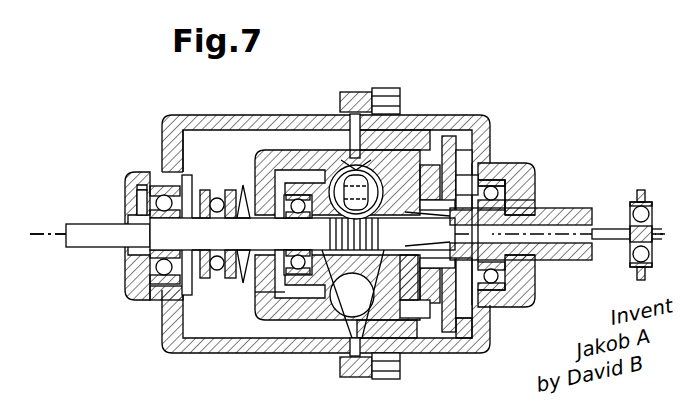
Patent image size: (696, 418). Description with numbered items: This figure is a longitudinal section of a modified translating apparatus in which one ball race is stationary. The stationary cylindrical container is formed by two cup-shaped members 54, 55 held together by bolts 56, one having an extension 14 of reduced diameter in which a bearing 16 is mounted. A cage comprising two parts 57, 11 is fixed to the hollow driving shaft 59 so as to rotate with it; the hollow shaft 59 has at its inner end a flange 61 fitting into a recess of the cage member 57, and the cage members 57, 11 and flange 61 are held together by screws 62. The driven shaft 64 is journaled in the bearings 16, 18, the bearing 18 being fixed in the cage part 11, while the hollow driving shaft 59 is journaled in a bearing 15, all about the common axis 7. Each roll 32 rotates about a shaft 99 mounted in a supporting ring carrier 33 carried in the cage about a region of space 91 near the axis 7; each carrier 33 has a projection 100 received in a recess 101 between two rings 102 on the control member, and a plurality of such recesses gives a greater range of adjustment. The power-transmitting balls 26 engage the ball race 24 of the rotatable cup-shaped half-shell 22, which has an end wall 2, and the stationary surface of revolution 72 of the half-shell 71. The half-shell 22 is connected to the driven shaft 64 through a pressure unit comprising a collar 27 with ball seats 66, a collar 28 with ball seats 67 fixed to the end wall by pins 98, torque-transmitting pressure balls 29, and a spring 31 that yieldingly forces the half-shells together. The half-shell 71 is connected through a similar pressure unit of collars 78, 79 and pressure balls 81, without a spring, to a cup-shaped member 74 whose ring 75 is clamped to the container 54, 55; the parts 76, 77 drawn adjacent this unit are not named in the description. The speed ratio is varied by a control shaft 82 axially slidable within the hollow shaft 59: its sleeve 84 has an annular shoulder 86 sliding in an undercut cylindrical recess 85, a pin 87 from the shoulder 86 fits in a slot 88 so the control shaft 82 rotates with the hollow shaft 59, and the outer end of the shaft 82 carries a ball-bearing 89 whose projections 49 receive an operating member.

The end wall 2 is at (266, 320).
The common axis 7 is at (665, 232).
The cage part 11 is at (278, 298).
The extension 14 is at (146, 200).
The bearing 15 is at (515, 292).
The bearing 16 is at (135, 290).
The bearing 18 is at (288, 200).
The cup-shaped half-shell 22 is at (262, 150).
The surface of revolution 24 is at (349, 176).
The power-transmitting balls 26 is at (346, 310).
The collar 27 is at (200, 267).
The collar 28 is at (228, 275).
The torque-transmitting pressure balls 29 is at (202, 193).
The spring 31 is at (172, 130).
The roll 32 is at (337, 172).
The supporting ring carrier 33 is at (346, 165).
The projections 49 is at (645, 198).
The cup-shaped member 54 is at (474, 165).
The cup-shaped member 55 is at (165, 165).
The bolts 56 is at (390, 90).
The cage part 57 is at (474, 130).
The hollow driving shaft 59 is at (575, 262).
The flange 61 is at (482, 143).
The screws 62 is at (333, 305).
The driven shaft 64 is at (92, 244).
The ball seat 66 is at (140, 212).
The ball seat 67 is at (214, 199).
The half-shell 71 is at (470, 330).
The surface of revolution 72 is at (424, 124).
The cup-shaped member 74 is at (444, 138).
The ring 75 is at (352, 92).
The bracket 76 is at (398, 148).
The ring 77 is at (506, 193).
The collar 78 is at (470, 178).
The collar 79 is at (512, 182).
The torque-transmitting pressure balls 81 is at (492, 172).
The control shaft 82 is at (604, 228).
The sleeve 84 is at (440, 312).
The undercut cylindrical recess 85 is at (535, 208).
The annular shoulder 86 is at (480, 292).
The pin 87 is at (470, 320).
The slot 88 is at (497, 300).
The ball-bearing 89 is at (649, 255).
The region of space 91 is at (352, 378).
The pins 98 is at (226, 268).
The shaft 99 is at (333, 160).
The projection 100 is at (500, 278).
The recess 101 is at (320, 305).
The rings 102 is at (412, 340).